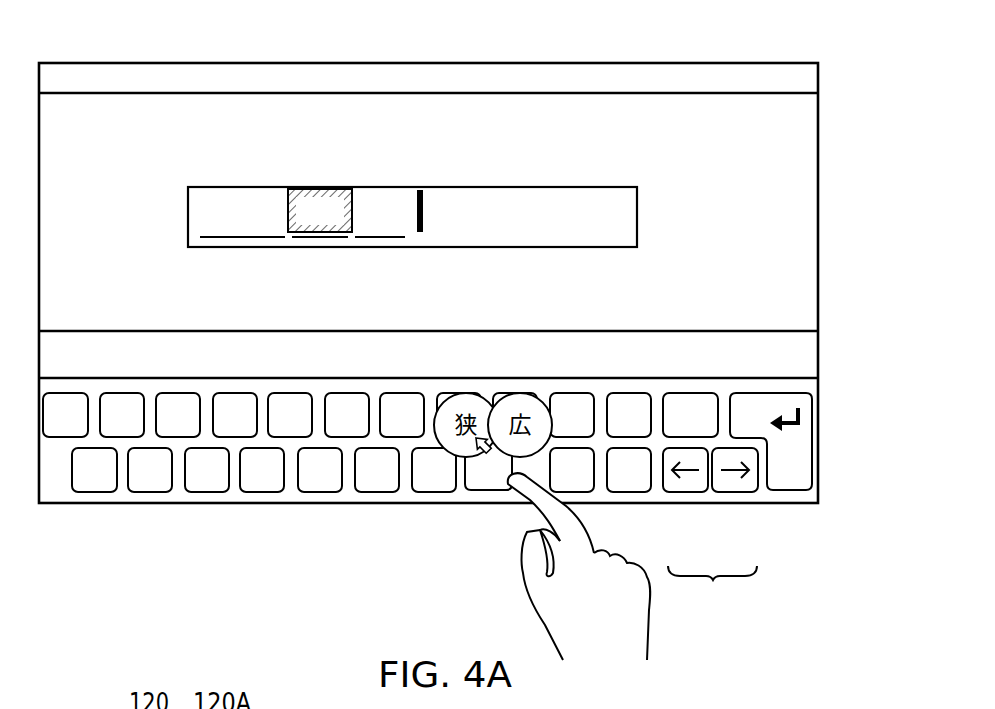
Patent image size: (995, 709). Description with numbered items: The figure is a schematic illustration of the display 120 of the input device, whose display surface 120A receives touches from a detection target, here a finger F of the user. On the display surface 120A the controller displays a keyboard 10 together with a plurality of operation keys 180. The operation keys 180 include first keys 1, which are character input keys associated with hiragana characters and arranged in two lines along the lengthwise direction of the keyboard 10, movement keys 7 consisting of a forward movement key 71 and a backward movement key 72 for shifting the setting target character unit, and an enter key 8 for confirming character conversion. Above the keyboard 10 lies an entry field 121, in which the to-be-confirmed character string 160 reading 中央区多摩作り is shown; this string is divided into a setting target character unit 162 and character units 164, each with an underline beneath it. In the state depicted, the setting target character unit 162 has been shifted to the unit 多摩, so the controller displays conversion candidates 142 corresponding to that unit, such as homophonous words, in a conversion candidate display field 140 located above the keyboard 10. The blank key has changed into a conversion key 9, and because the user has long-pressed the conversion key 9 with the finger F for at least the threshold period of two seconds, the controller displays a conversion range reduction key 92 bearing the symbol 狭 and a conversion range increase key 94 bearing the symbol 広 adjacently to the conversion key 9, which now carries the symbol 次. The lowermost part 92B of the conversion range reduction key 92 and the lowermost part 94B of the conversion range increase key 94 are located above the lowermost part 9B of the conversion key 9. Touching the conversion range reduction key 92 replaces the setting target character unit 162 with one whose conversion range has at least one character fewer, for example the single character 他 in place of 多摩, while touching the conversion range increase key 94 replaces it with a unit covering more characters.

The keyboard 10 is at (818, 397).
The display 120 is at (170, 62).
The display surface 120A is at (235, 117).
The entry field 121 is at (188, 211).
The conversion candidates 142 is at (105, 331).
The conversion candidate display field 140 is at (466, 472).
The to-be-confirmed character string 160 is at (377, 108).
The setting target character unit 162 is at (322, 183).
The character unit 164 is at (254, 183).
The first key 1 is at (127, 437).
The movement keys 7 is at (712, 591).
The forward movement key 71 is at (678, 494).
The backward movement key 72 is at (743, 494).
The enter key 8 is at (787, 491).
The conversion key 9 is at (495, 493).
The lowermost part of the conversion key 9B is at (480, 496).
The conversion range reduction key 92 is at (468, 393).
The lowermost part of the conversion range reduction key 92B is at (463, 462).
The conversion range increase key 94 is at (523, 393).
The lowermost part of the conversion range increase key 94B is at (537, 459).
The finger F is at (518, 497).
The operation keys 180 is at (228, 541).